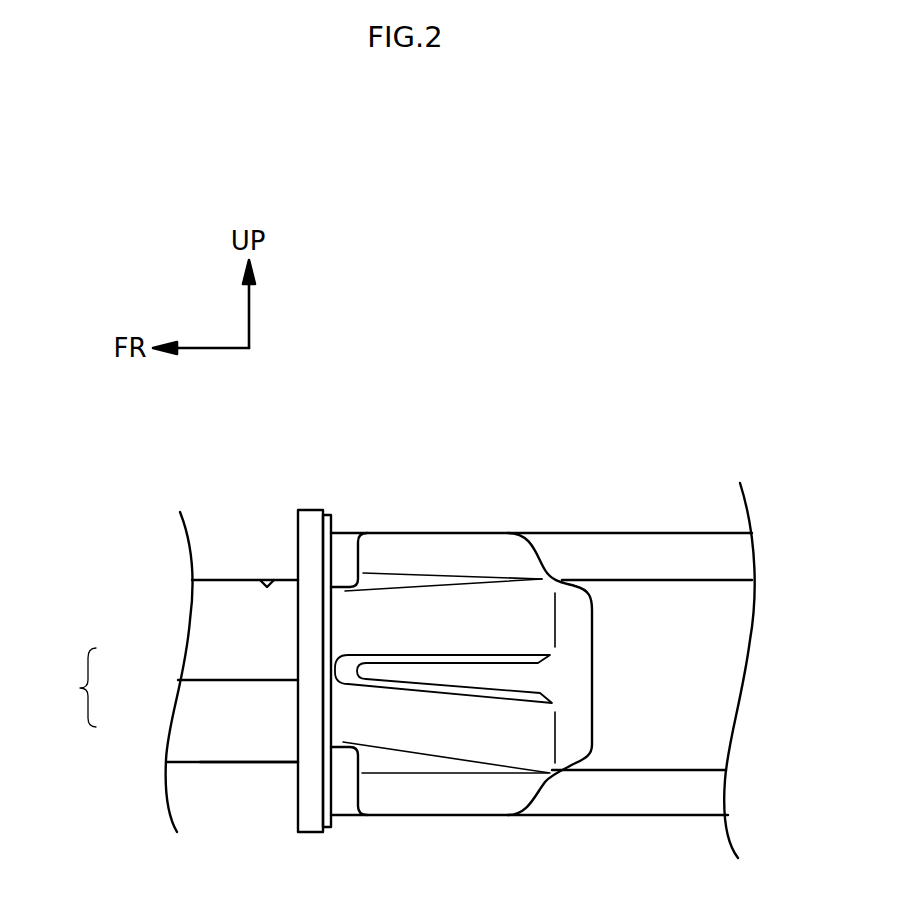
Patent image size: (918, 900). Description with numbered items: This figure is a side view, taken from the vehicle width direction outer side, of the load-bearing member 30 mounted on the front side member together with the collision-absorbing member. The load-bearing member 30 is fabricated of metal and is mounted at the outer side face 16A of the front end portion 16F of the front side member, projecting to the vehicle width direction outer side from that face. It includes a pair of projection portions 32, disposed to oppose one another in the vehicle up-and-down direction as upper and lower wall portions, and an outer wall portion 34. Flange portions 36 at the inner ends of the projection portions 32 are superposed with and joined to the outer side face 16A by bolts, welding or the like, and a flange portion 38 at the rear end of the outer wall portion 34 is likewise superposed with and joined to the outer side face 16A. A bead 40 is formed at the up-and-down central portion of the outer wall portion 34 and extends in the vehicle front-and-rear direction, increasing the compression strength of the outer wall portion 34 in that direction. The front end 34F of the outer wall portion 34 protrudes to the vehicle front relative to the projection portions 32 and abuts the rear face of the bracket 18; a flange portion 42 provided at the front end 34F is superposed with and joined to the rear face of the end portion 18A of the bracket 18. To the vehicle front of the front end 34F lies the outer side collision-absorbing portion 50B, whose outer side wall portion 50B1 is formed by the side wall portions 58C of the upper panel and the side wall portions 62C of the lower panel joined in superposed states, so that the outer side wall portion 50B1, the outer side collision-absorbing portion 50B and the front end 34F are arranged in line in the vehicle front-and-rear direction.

The front end portion 16F is at (651, 528).
The outer side face 16A is at (723, 612).
The bracket 18 is at (294, 743).
The end portion 18A is at (308, 794).
The load-bearing member 30 is at (549, 557).
The projection portions 32 is at (390, 583).
The outer wall portion 34 is at (517, 628).
The front end 34F is at (331, 618).
The flange portions 36 is at (456, 546).
The flange portion 38 is at (578, 695).
The bead 40 is at (497, 678).
The flange portion 42 is at (323, 641).
The outer side collision-absorbing portion 50B is at (208, 623).
The outer side wall portion 50B1 is at (57, 687).
The side wall portions 58C is at (195, 654).
The side wall portions 62C is at (190, 712).